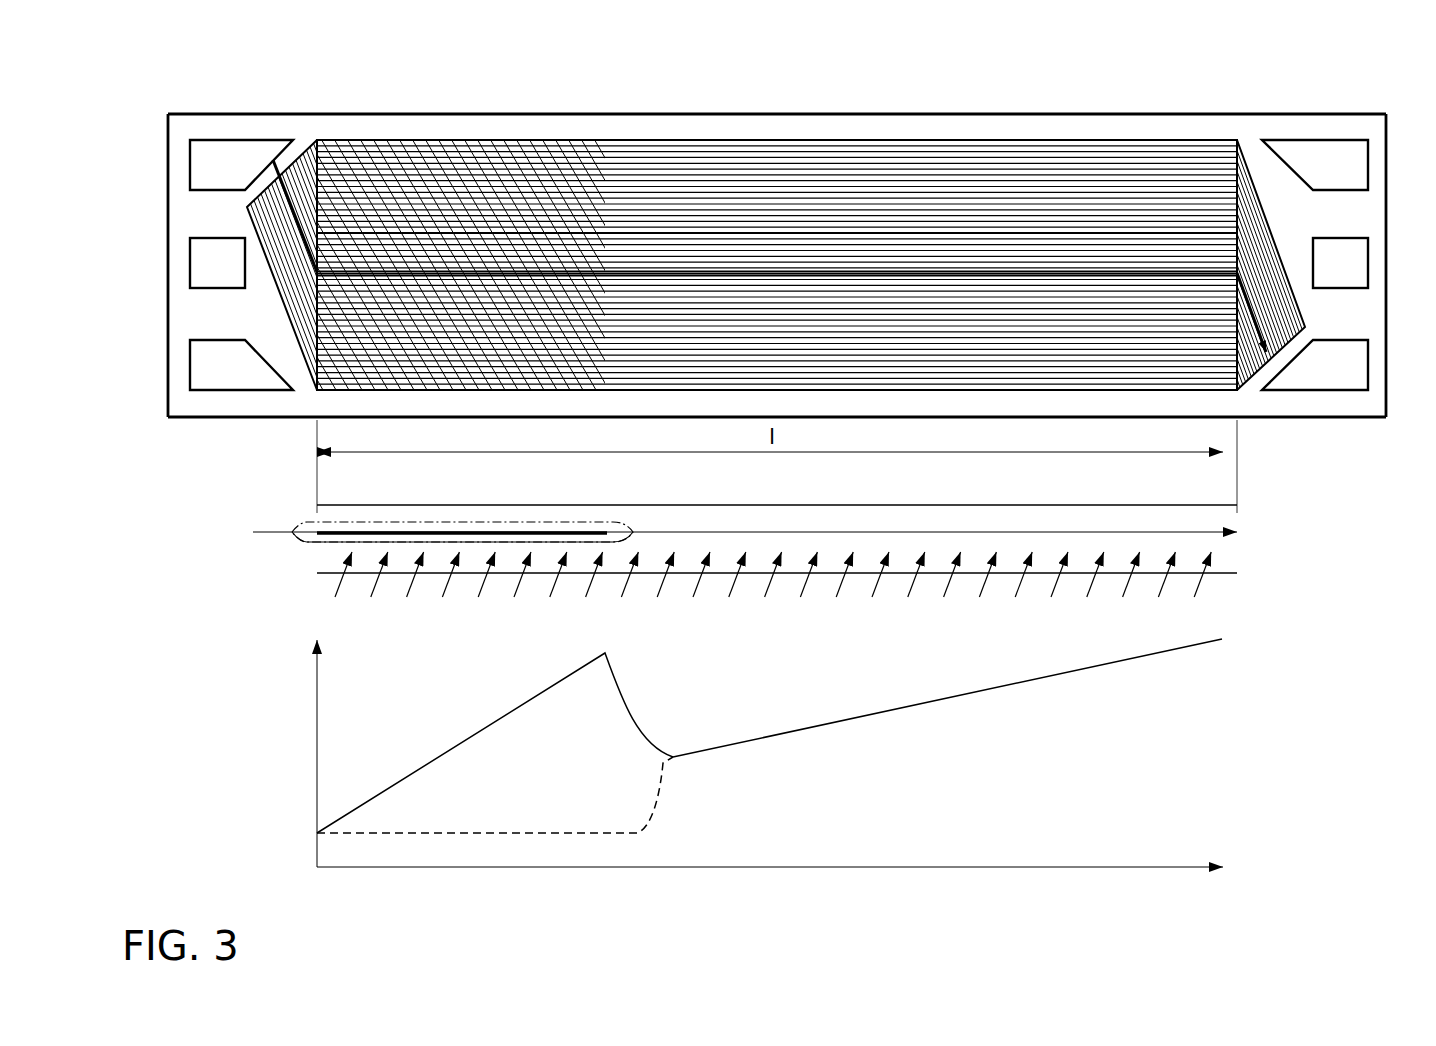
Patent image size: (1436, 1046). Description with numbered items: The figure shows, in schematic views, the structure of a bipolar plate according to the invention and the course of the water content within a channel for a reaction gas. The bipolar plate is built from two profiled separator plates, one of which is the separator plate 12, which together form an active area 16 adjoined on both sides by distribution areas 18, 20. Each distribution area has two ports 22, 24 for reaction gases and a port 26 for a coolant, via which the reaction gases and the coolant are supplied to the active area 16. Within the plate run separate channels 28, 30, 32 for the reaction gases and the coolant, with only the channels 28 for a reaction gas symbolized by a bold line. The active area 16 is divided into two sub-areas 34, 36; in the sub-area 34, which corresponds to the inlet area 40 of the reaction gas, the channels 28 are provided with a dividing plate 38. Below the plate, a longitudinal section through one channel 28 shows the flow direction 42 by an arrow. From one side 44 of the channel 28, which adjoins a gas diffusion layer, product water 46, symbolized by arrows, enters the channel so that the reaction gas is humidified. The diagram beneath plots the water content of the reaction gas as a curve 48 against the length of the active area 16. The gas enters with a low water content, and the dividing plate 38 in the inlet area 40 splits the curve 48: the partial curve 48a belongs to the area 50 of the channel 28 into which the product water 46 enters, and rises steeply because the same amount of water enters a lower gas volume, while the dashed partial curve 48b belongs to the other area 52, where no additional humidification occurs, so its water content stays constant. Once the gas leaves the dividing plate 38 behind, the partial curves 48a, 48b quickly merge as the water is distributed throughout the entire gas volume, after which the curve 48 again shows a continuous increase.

The separator plate 12 is at (1180, 114).
The active area 16 is at (660, 140).
The distribution area 18 is at (243, 125).
The distribution area 20 is at (1313, 125).
The port for reaction gas 22 is at (209, 165).
The port for reaction gas 24 is at (209, 365).
The port for coolant 26 is at (209, 265).
The channel for reaction gas 28 is at (994, 273).
The channel 30 is at (757, 165).
The channel 32 is at (777, 268).
The sub-area 34 is at (463, 165).
The sub-area 36 is at (1069, 172).
The dividing plate 38 is at (519, 533).
The inlet area 40 is at (459, 265).
The flow direction 42 is at (941, 532).
The side of the channel 44 is at (998, 600).
The product water 46 is at (1059, 580).
The curve 48 is at (1137, 657).
The partial curve 48a is at (482, 731).
The partial curve 48b is at (647, 801).
The area of the channel 50 is at (444, 540).
The area of the channel 52 is at (430, 522).